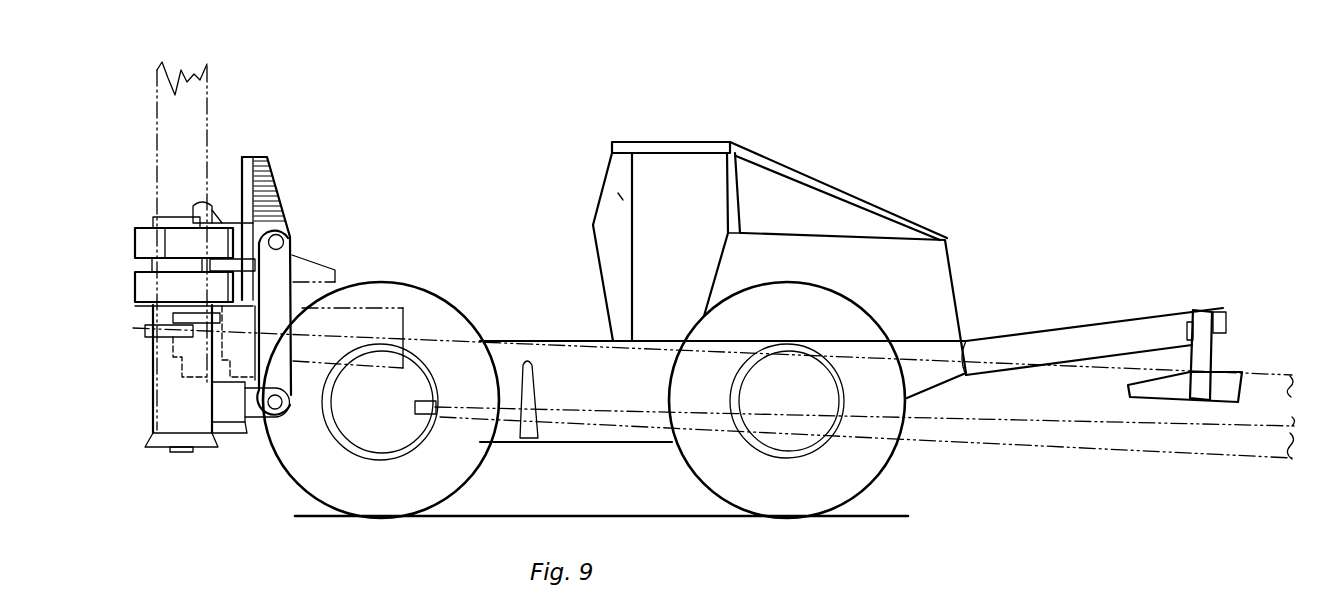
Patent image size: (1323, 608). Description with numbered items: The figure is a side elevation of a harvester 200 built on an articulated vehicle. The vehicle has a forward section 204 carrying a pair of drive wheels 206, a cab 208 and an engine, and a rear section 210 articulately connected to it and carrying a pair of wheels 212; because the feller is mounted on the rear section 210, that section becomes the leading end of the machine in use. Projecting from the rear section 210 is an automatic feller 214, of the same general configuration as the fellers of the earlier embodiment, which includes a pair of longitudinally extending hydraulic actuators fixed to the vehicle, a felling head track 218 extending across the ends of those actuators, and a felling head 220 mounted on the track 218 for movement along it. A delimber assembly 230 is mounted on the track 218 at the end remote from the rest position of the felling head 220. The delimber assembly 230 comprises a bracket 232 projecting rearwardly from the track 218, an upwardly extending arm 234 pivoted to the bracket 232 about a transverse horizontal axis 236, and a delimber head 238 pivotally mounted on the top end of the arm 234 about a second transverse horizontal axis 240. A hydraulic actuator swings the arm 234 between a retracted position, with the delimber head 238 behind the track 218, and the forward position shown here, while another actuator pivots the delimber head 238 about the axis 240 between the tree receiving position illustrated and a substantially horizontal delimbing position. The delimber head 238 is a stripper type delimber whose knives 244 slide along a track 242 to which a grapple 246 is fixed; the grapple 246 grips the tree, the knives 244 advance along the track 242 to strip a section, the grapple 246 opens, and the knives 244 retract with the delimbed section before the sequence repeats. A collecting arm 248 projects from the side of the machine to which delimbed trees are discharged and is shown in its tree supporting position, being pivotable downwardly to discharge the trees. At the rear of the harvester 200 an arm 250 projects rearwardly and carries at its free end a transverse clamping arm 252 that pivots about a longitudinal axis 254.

The harvester 200 is at (606, 448).
The forward section 204 is at (778, 143).
The drive wheels 206 is at (862, 467).
The cab 208 is at (680, 112).
The rear section 210 is at (530, 320).
The wheels 212 is at (437, 487).
The automatic feller 214 is at (160, 465).
The felling head track 218 is at (227, 432).
The felling head 220 is at (140, 403).
The delimber assembly 230 is at (300, 199).
The bracket 232 is at (267, 418).
The arm 234 is at (280, 262).
The transverse horizontal axis 236 is at (273, 410).
The delimber head 238 is at (124, 240).
The transverse horizontal axis 240 is at (284, 236).
The track 242 is at (274, 186).
The knives 244 is at (178, 217).
The grapple 246 is at (133, 283).
The collecting arm 248 is at (528, 430).
The arm 250 is at (1093, 330).
The transverse clamping arm 252 is at (1232, 372).
The longitudinal axis 254 is at (1223, 313).